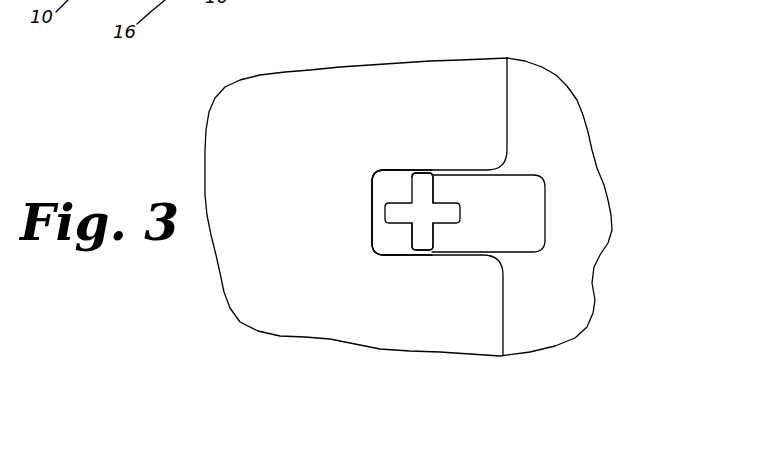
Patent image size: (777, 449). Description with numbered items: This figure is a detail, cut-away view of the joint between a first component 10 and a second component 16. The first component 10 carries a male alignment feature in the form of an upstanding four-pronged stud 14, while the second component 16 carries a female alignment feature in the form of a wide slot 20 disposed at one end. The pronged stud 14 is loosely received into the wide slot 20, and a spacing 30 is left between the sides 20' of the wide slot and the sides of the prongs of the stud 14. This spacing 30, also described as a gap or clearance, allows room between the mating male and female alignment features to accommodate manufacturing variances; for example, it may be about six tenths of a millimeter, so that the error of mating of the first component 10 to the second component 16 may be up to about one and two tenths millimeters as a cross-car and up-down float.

The first component 10 is at (608, 201).
The second component 16 is at (359, 62).
The four-pronged stud 14 is at (538, 186).
The spacing 30 is at (430, 172).
The wide slot 20 is at (369, 192).
The sides of the wide slot 20' is at (341, 216).